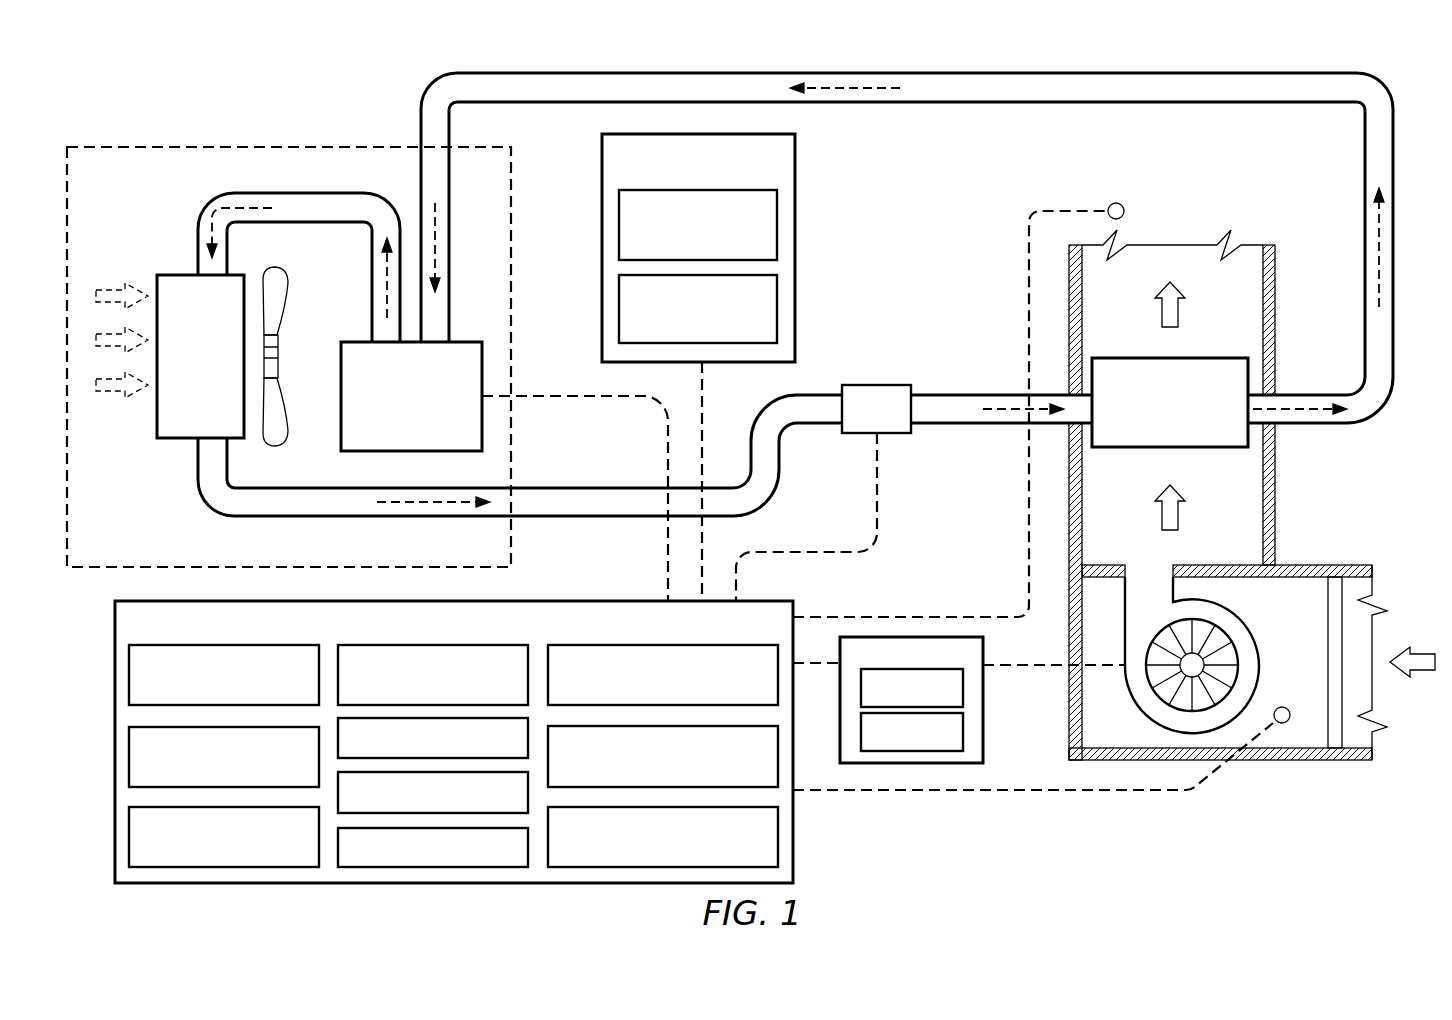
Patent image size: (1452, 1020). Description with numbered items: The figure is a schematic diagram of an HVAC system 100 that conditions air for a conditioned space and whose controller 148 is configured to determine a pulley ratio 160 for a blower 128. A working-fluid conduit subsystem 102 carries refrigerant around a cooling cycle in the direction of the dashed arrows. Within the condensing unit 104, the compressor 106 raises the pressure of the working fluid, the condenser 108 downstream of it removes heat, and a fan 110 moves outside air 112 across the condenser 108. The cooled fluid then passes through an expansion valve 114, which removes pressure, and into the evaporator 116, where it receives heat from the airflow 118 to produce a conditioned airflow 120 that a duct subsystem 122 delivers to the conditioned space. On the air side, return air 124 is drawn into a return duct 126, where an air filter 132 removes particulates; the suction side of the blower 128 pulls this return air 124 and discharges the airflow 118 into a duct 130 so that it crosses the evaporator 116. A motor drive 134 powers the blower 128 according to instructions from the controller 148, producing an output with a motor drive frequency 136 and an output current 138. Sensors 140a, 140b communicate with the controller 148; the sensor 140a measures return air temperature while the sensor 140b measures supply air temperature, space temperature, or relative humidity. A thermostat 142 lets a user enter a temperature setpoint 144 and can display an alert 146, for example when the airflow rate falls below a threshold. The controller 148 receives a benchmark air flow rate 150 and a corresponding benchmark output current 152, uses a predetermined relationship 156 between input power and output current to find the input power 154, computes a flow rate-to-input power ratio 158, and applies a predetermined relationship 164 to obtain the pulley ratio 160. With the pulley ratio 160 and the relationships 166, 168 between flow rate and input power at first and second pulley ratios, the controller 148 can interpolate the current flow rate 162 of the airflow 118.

The HVAC system 100 is at (1180, 35).
The working-fluid conduit subsystem 102 is at (597, 74).
The condensing unit 104 is at (292, 147).
The compressor 106 is at (411, 396).
The condenser 108 is at (157, 426).
The fan 110 is at (288, 285).
The air 112 is at (112, 270).
The expansion valve 114 is at (876, 409).
The evaporator 116 is at (1170, 402).
The airflow 118 is at (1178, 515).
The conditioned airflow 120 is at (1178, 312).
The duct subsystem 122 is at (1275, 290).
The return air 124 is at (1417, 673).
The return duct 126 is at (1302, 760).
The blower 128 is at (1247, 623).
The duct 130 is at (1275, 477).
The air filter 132 is at (1333, 628).
The motor drive 134 is at (983, 648).
The motor drive frequency 136 is at (963, 686).
The output current 138 is at (963, 731).
The sensor 140a is at (1282, 707).
The sensor 140b is at (1124, 211).
The thermostat 142 is at (795, 160).
The temperature setpoint 144 is at (777, 223).
The alert 146 is at (777, 308).
The controller 148 is at (454, 742).
The benchmark air flow rate 150 is at (224, 675).
The benchmark output current 152 is at (224, 757).
The input power 154 is at (224, 837).
The predetermined relationship of power input to output current 156 is at (433, 675).
The flow rate-to-input power ratio 158 is at (433, 738).
The pulley ratio 160 is at (433, 792).
The current flow rate 162 is at (433, 847).
The predetermined relationship between pulley ratio and flow rate-to-input power rat 164 is at (663, 675).
The relationship between flow rate and input power at first pulley ratio 166 is at (663, 756).
The relationship between flow rate and input power at second pulley ratio 168 is at (663, 837).